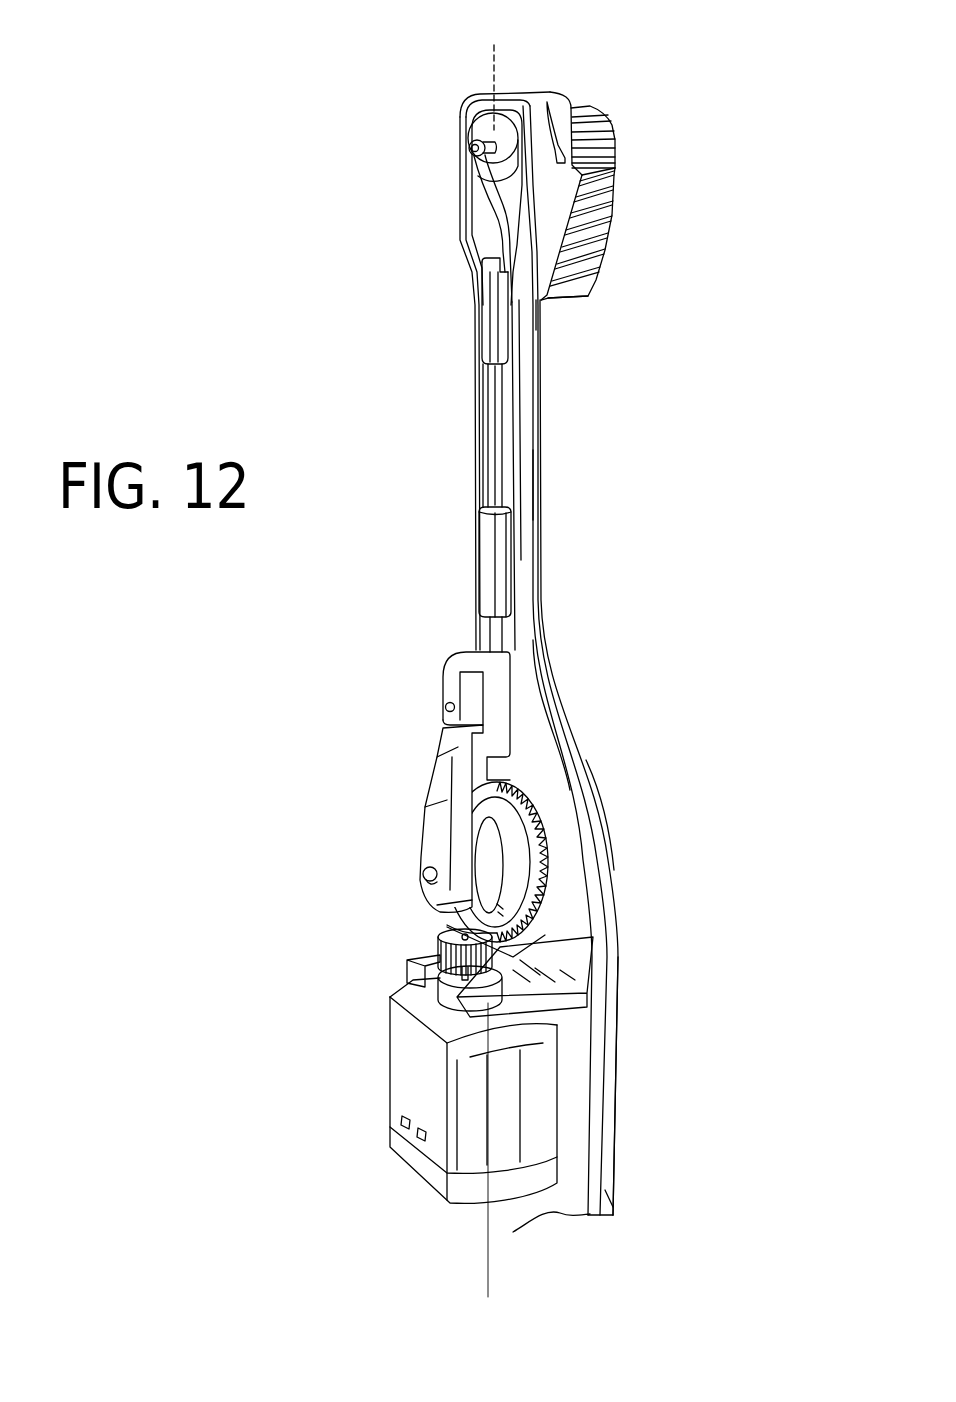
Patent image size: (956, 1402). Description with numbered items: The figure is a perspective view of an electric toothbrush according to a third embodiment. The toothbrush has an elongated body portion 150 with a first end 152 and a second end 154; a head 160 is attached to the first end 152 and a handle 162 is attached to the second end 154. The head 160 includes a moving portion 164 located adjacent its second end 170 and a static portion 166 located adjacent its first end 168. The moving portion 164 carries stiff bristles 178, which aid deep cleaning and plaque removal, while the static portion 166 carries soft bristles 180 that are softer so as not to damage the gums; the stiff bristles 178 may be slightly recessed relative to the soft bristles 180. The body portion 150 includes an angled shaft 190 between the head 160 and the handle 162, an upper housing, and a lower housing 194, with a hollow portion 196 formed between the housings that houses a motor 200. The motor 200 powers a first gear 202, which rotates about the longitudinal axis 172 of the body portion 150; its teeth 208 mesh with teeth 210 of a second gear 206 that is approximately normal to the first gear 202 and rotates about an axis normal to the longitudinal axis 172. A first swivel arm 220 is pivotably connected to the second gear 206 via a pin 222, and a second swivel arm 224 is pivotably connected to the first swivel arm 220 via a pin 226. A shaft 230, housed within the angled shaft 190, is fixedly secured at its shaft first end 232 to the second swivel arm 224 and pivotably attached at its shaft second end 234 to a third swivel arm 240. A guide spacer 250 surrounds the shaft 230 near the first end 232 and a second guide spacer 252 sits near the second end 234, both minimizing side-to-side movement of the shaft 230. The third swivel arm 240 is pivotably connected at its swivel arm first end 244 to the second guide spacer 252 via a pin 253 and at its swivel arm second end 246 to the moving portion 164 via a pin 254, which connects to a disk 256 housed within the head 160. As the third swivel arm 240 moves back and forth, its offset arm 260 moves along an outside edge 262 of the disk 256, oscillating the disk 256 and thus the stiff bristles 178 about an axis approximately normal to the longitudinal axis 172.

The elongated body portion 150 is at (542, 660).
The first end 152 is at (533, 320).
The second end 154 is at (608, 918).
The head 160 is at (533, 107).
The handle 162 is at (593, 1183).
The moving portion 164 is at (567, 120).
The static portion 166 is at (593, 237).
The first end 168 is at (540, 270).
The second end 170 is at (521, 106).
The longitudinal axis 172 is at (487, 1247).
The stiff bristles 178 is at (593, 143).
The soft bristles 180 is at (603, 187).
The angled shaft 190 is at (530, 493).
The lower housing 194 is at (590, 768).
The hollow portion 196 is at (535, 740).
The motor 200 is at (403, 1082).
The first gear 202 is at (403, 998).
The second gear 206 is at (497, 907).
The teeth 208 is at (437, 933).
The teeth 210 is at (550, 853).
The first swivel arm 220 is at (433, 770).
The pin 222 is at (425, 873).
The second swivel arm 224 is at (450, 675).
The pin 226 is at (450, 713).
The shaft 230 is at (493, 427).
The shaft first end 232 is at (493, 630).
The shaft second end 234 is at (500, 367).
The third swivel arm 240 is at (488, 217).
The swivel arm first end 244 is at (483, 268).
The swivel arm second end 246 is at (477, 163).
The guide spacer 250 is at (487, 545).
The second guide spacer 252 is at (487, 320).
The pin 253 is at (480, 277).
The pin 254 is at (470, 147).
The disk 256 is at (487, 117).
The offset arm 260 is at (480, 188).
The outside edge 262 is at (470, 120).